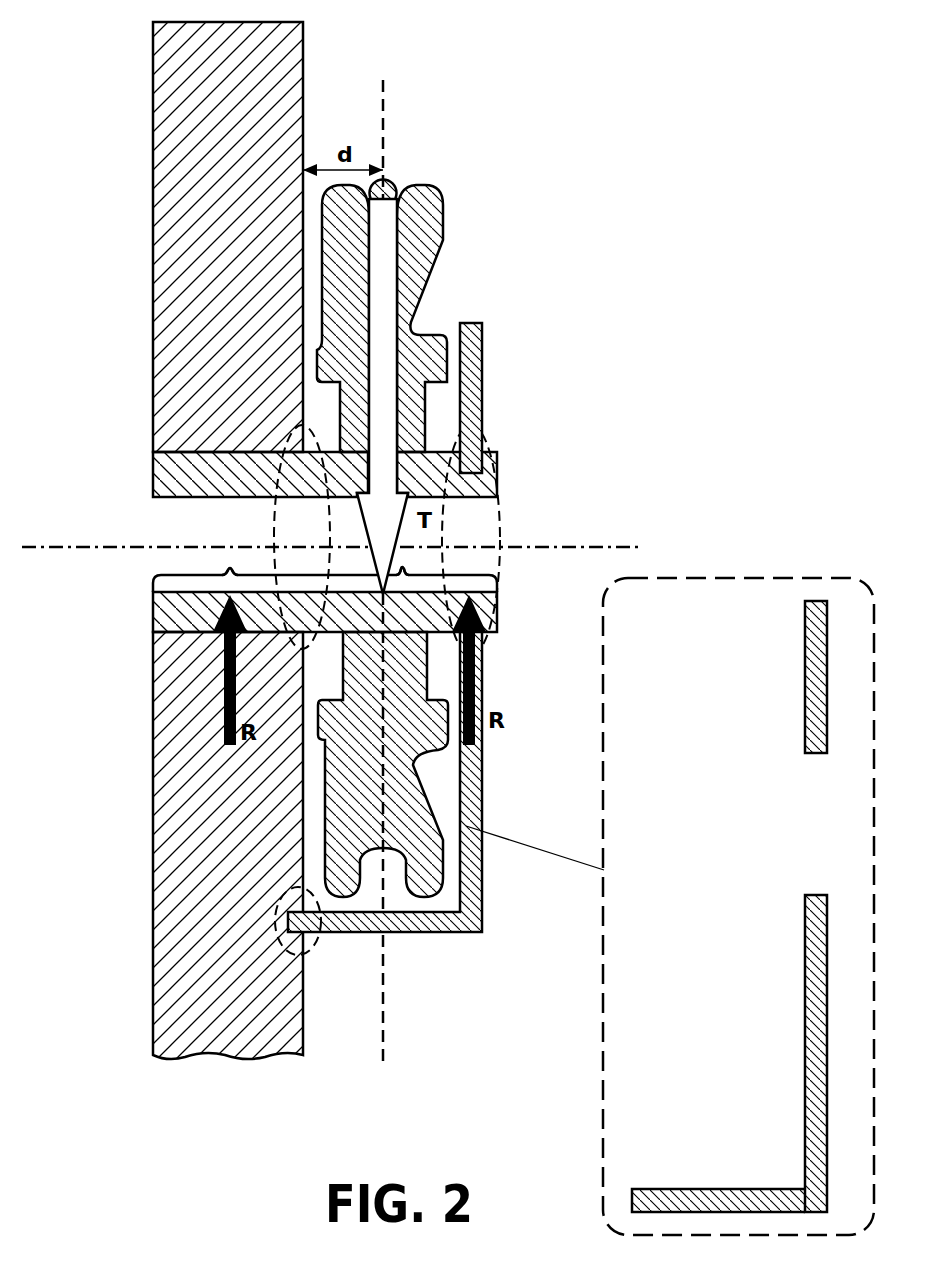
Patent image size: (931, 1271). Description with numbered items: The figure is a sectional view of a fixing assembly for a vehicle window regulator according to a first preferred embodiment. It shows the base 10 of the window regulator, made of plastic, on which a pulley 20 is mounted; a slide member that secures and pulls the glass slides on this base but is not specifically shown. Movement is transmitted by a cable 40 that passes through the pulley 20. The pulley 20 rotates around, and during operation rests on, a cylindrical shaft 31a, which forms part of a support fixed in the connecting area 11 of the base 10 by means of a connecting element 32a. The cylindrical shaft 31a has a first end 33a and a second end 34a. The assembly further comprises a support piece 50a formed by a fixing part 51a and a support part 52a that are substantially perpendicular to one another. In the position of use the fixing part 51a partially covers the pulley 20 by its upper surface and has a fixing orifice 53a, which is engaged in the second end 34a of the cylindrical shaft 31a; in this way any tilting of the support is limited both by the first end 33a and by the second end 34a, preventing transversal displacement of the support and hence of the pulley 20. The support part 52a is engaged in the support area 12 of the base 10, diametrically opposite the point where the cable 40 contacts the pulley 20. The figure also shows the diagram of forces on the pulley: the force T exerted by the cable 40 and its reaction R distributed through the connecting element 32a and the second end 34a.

The base 10 is at (183, 145).
The connecting area 11 is at (167, 556).
The support area 12 is at (318, 953).
The pulley 20 is at (428, 232).
The cable 40 is at (390, 190).
The cylindrical shaft 31a is at (404, 567).
The connecting element 32a is at (230, 565).
The first end 33a is at (270, 522).
The second end 34a is at (500, 508).
The support piece 50a is at (738, 906).
The fixing part 51a is at (815, 688).
The support part 52a is at (690, 1197).
The fixing orifice 53a is at (729, 906).